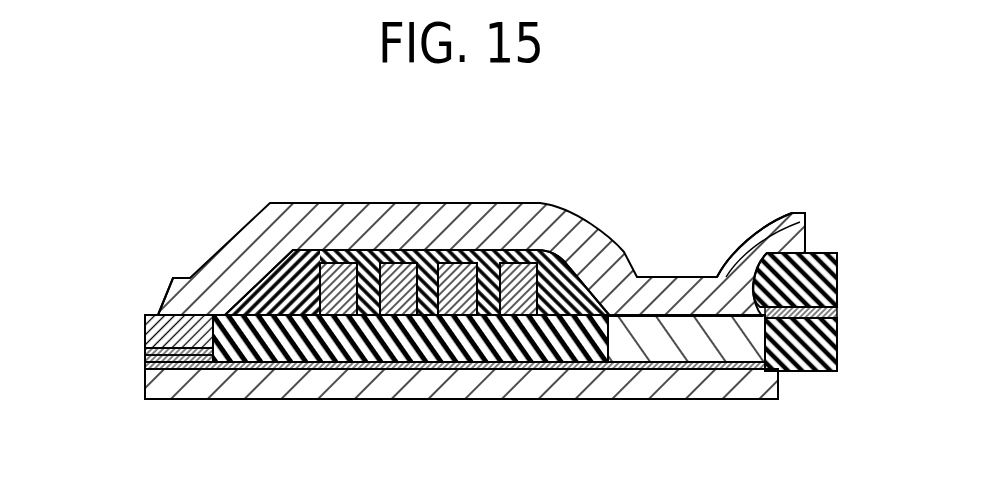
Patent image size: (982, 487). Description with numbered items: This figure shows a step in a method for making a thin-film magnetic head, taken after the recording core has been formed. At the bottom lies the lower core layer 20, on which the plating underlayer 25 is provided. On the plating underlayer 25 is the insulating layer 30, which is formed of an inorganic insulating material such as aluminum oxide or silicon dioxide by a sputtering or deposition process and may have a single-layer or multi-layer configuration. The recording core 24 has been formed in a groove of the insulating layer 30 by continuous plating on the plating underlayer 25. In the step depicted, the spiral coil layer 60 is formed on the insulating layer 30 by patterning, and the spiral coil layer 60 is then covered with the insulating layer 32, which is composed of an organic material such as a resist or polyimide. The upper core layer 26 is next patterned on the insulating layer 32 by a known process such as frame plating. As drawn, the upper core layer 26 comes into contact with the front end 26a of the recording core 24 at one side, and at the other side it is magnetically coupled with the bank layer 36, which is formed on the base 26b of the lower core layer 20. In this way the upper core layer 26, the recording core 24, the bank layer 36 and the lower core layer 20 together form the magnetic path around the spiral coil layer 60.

The lower core layer 20 is at (740, 388).
The recording core 24 is at (136, 315).
The plating underlayer 25 is at (303, 367).
The upper core layer 26 is at (345, 230).
The front end 26a is at (183, 298).
The base 26b is at (683, 298).
The insulating layer 30 is at (455, 337).
The insulating layer 32 is at (560, 290).
The bank layer 36 is at (667, 338).
The spiral coil layer 60 is at (420, 258).